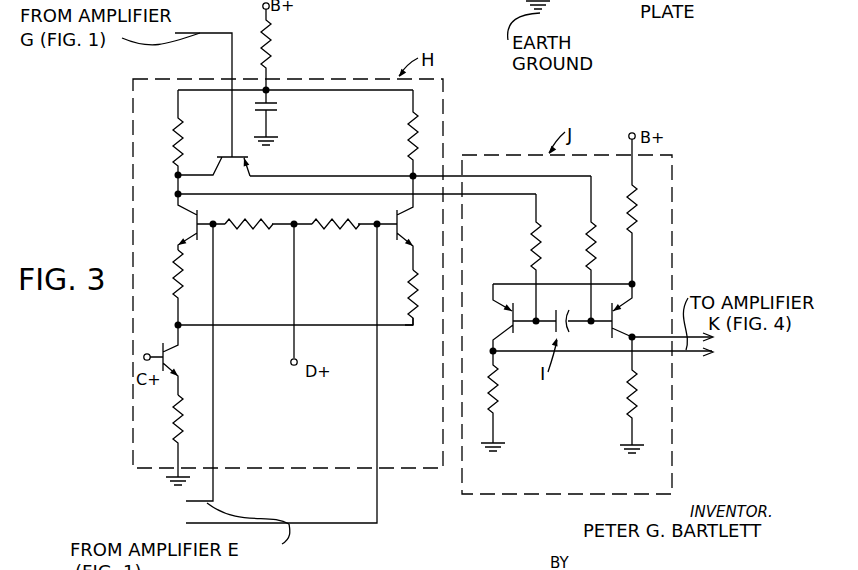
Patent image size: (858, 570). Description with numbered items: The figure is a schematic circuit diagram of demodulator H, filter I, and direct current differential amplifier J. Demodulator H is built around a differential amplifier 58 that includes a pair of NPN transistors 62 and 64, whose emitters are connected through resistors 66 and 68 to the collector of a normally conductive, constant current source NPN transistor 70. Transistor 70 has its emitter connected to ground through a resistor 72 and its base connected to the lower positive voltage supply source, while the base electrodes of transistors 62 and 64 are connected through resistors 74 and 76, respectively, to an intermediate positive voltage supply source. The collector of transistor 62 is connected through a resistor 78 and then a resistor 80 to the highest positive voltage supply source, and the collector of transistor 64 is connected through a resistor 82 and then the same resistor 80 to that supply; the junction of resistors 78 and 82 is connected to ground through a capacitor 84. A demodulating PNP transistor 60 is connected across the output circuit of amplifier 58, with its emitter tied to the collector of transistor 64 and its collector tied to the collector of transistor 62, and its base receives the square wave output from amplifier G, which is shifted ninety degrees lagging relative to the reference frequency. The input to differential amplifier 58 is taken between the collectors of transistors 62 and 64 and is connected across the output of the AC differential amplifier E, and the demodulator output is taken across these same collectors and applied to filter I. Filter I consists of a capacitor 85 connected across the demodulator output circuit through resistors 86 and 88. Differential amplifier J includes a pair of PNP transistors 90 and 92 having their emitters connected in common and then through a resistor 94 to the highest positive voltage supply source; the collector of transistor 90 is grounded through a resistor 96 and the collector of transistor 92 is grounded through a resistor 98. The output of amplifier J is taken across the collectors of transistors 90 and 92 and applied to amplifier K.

The differential amplifier 58 is at (420, 328).
The demodulating PNP transistor 60 is at (221, 155).
The NPN transistor 62 is at (195, 230).
The NPN transistor 64 is at (397, 216).
The resistor 66 is at (174, 278).
The resistor 68 is at (408, 292).
The constant current source NPN transistor 70 is at (172, 348).
The resistor 72 is at (174, 422).
The resistor 74 is at (236, 228).
The resistor 76 is at (323, 229).
The resistor 78 is at (174, 138).
The resistor 80 is at (268, 42).
The resistor 82 is at (411, 134).
The capacitor 84 is at (272, 112).
The capacitor 85 is at (553, 313).
The resistor 86 is at (537, 240).
The resistor 88 is at (590, 246).
The PNP transistor 90 is at (508, 336).
The PNP transistor 92 is at (616, 319).
The resistor 94 is at (638, 205).
The resistor 96 is at (500, 398).
The resistor 98 is at (628, 400).